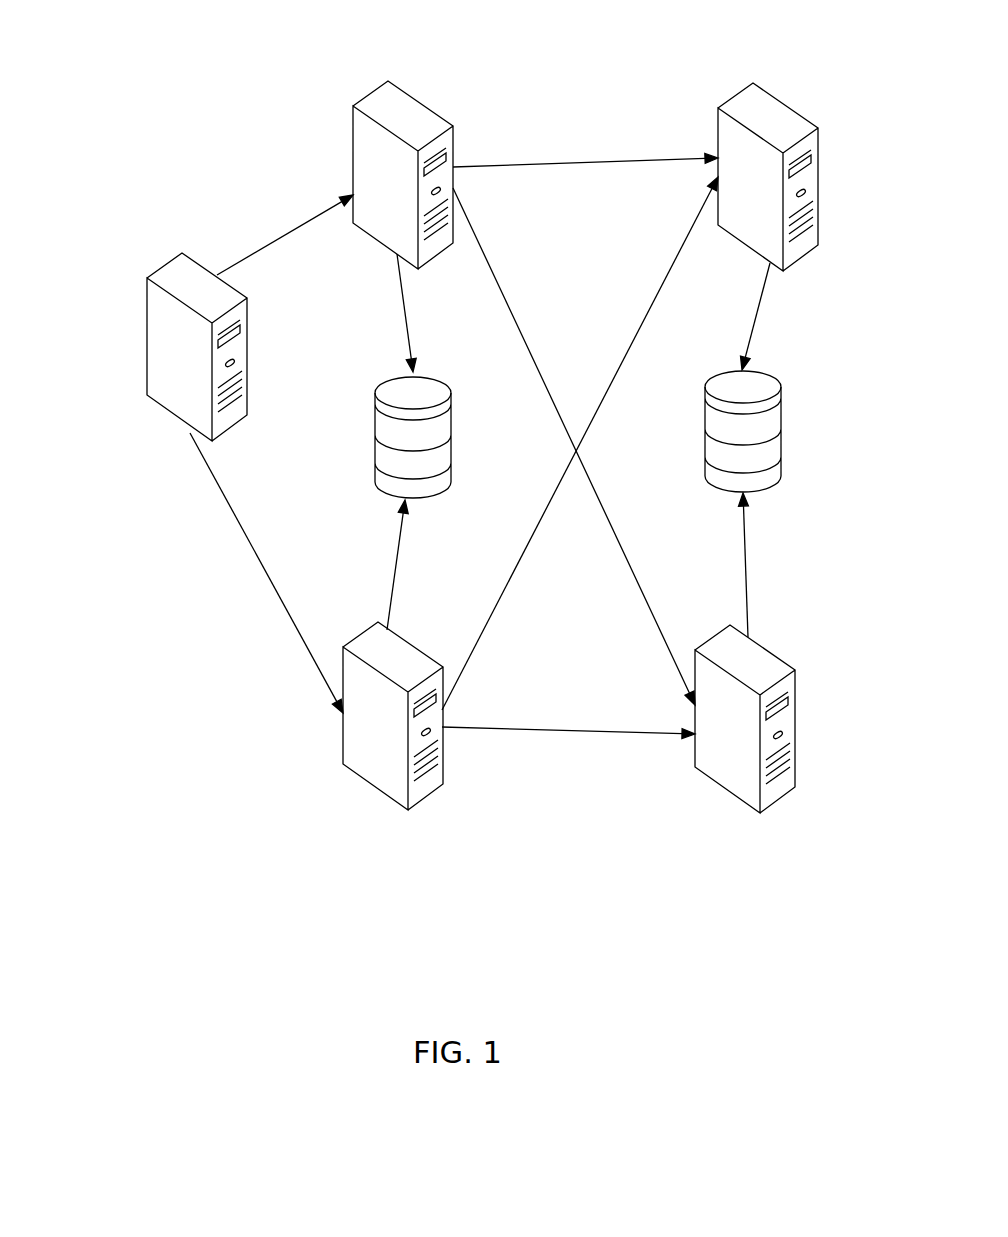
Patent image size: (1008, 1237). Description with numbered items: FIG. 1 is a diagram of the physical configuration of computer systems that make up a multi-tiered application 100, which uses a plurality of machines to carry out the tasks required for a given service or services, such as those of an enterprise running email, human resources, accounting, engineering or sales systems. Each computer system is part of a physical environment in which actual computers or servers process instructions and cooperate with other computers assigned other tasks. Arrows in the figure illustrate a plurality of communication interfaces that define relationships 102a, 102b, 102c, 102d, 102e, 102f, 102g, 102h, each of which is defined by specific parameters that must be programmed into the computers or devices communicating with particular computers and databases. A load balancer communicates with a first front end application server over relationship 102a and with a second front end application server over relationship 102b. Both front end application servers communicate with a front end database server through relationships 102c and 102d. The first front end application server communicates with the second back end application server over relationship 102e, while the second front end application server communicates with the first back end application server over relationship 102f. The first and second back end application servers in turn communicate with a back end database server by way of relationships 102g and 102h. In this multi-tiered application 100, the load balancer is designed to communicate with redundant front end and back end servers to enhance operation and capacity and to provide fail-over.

The multi-tiered application 100 is at (164, 103).
The relationship 102a is at (257, 257).
The relationship 102b is at (258, 560).
The relationship 102c is at (409, 332).
The relationship 102d is at (397, 569).
The relationship 102e is at (524, 338).
The relationship 102f is at (636, 334).
The relationship 102g is at (755, 315).
The relationship 102h is at (746, 565).